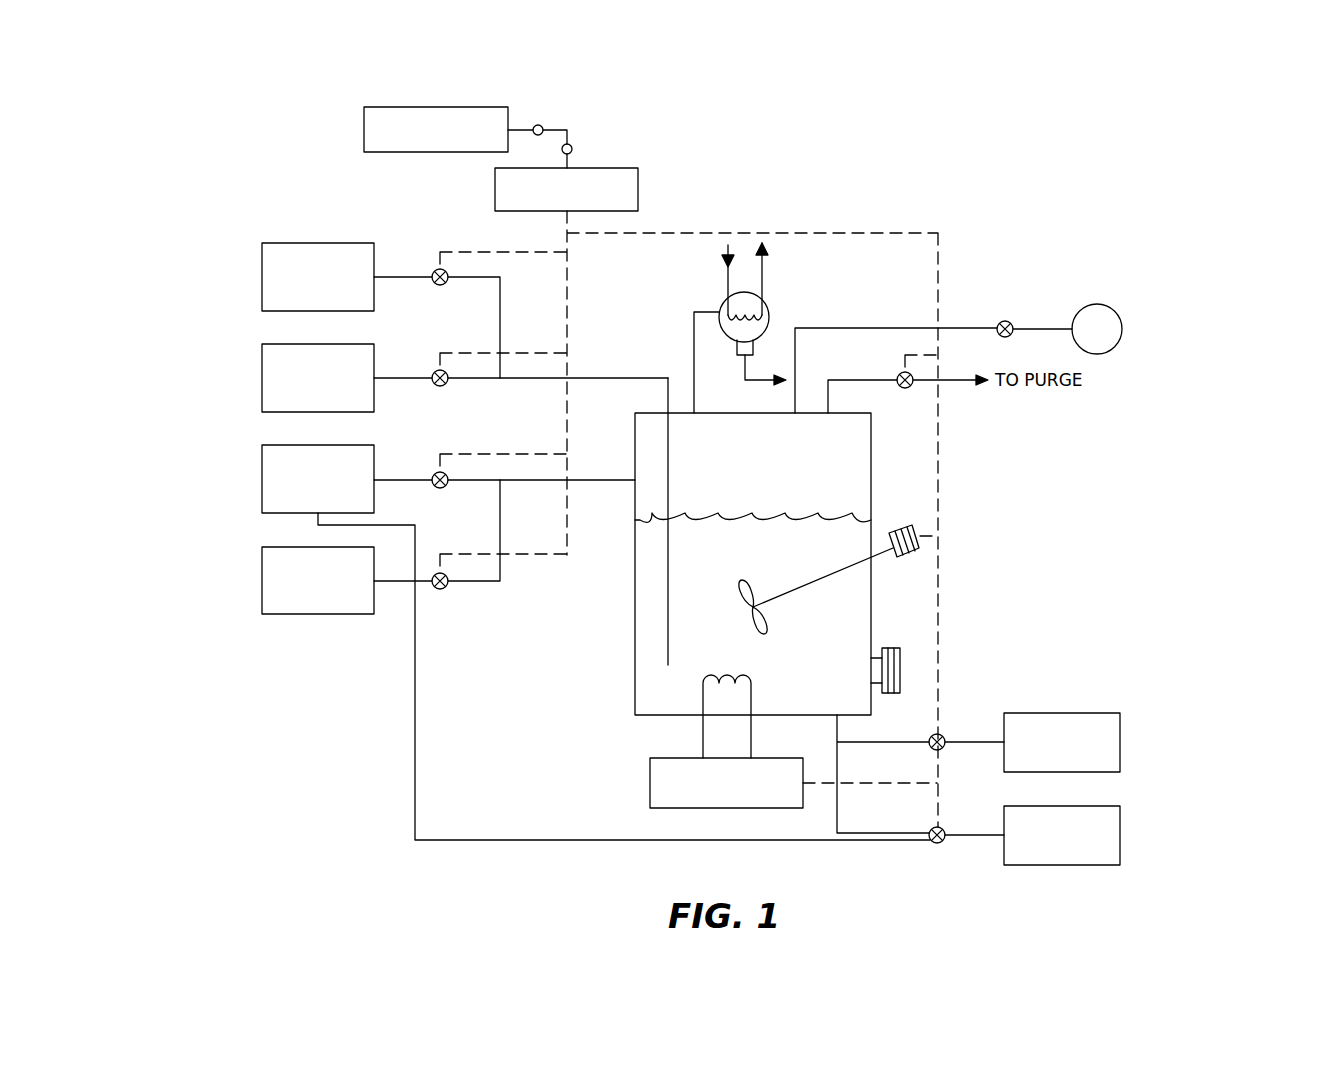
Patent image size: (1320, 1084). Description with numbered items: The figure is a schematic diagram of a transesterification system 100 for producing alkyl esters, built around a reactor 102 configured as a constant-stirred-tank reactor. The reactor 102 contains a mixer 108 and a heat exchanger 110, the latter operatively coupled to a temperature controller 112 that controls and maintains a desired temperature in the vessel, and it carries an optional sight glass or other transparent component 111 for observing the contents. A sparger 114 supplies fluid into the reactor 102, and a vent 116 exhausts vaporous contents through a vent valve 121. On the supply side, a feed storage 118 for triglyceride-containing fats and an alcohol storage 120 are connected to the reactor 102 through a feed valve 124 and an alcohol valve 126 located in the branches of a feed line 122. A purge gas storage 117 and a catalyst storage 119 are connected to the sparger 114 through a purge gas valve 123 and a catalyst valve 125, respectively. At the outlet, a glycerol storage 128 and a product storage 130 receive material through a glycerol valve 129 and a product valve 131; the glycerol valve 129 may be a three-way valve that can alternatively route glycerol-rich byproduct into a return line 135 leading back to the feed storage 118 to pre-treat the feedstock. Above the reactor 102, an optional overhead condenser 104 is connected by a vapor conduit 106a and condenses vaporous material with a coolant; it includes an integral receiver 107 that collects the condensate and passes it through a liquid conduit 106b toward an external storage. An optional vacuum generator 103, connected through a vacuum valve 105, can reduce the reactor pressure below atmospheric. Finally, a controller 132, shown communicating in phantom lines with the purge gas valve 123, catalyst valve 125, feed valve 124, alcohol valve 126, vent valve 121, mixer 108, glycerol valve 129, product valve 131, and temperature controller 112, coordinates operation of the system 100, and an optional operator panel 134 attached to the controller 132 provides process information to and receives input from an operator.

The transesterification system 100 is at (1157, 213).
The reactor 102 is at (635, 675).
The vacuum generator 103 is at (1096, 304).
The overhead condenser 104 is at (770, 307).
The vacuum valve 105 is at (1003, 320).
The vapor conduit 106a is at (694, 312).
The liquid conduit 106b is at (757, 386).
The receiver 107 is at (735, 350).
The mixer 108 is at (880, 556).
The heat exchanger 110 is at (703, 745).
The transparent component 111 is at (900, 658).
The temperature controller 112 is at (650, 790).
The sparger 114 is at (668, 617).
The vent 116 is at (882, 380).
The purge gas storage 117 is at (262, 277).
The feed storage 118 is at (262, 480).
The catalyst storage 119 is at (262, 378).
The alcohol storage 120 is at (262, 581).
The vent valve 121 is at (905, 388).
The feed line 122 is at (557, 482).
The purge gas valve 123 is at (440, 286).
The feed valve 124 is at (440, 489).
The catalyst valve 125 is at (440, 387).
The alcohol valve 126 is at (440, 590).
The glycerol storage 128 is at (1120, 835).
The glycerol valve 129 is at (940, 843).
The product storage 130 is at (1120, 742).
The product valve 131 is at (940, 750).
The controller 132 is at (495, 190).
The operator panel 134 is at (364, 131).
The return line 135 is at (414, 737).